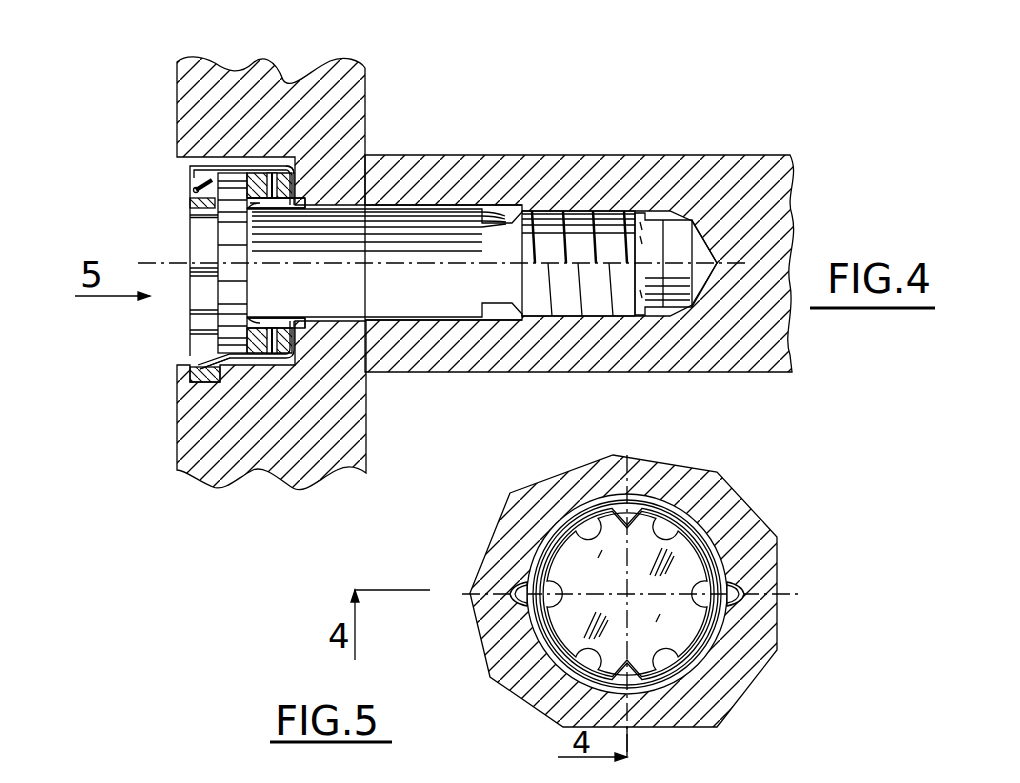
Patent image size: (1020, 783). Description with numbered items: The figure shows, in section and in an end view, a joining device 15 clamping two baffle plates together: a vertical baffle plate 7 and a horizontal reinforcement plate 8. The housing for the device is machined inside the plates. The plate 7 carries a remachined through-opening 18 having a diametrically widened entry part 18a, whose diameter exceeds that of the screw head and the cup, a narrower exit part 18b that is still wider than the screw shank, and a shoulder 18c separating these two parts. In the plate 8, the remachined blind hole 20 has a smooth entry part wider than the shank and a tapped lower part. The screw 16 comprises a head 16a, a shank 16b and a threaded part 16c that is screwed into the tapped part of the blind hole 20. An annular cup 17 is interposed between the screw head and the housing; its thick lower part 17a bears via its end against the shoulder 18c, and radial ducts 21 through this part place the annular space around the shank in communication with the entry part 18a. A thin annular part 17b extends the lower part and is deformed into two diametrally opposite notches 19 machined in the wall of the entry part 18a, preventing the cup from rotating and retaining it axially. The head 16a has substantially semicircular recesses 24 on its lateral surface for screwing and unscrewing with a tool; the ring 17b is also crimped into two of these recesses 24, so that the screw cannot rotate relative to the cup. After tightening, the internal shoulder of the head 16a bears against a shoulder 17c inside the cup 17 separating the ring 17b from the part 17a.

In FIG. 4, the plate 7 is at (228, 88).
In FIG. 5, the plate 7 is at (765, 617).
In FIG. 4, the plate 8 is at (743, 190).
In FIG. 4, the joining device 15 is at (158, 223).
In FIG. 4, the screw 16 is at (388, 258).
In FIG. 4, the screw head 16a is at (210, 263).
In FIG. 5, the screw head 16a is at (560, 622).
In FIG. 4, the shank 16b is at (443, 247).
In FIG. 4, the threaded part 16c is at (600, 300).
In FIG. 4, the cup 17 is at (272, 262).
In FIG. 5, the cup 17 is at (713, 634).
In FIG. 4, the lower part of the cup 17a is at (296, 172).
In FIG. 4, the thin annular part 17b is at (185, 374).
In FIG. 4, the shoulder 17c is at (212, 374).
In FIG. 4, the opening 18 is at (259, 326).
In FIG. 5, the opening 18 is at (718, 627).
In FIG. 4, the entry part 18a is at (268, 342).
In FIG. 4, the exit part 18b is at (330, 320).
In FIG. 4, the shoulder 18c is at (303, 330).
In FIG. 4, the notches 19 is at (200, 380).
In FIG. 5, the notches 19 is at (517, 587).
In FIG. 4, the blind hole 20 is at (448, 322).
In FIG. 4, the radial ducts 21 is at (277, 180).
In FIG. 5, the recesses 24 is at (548, 598).